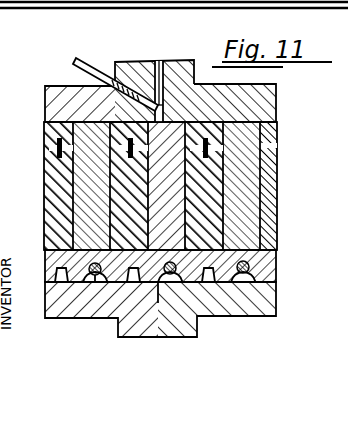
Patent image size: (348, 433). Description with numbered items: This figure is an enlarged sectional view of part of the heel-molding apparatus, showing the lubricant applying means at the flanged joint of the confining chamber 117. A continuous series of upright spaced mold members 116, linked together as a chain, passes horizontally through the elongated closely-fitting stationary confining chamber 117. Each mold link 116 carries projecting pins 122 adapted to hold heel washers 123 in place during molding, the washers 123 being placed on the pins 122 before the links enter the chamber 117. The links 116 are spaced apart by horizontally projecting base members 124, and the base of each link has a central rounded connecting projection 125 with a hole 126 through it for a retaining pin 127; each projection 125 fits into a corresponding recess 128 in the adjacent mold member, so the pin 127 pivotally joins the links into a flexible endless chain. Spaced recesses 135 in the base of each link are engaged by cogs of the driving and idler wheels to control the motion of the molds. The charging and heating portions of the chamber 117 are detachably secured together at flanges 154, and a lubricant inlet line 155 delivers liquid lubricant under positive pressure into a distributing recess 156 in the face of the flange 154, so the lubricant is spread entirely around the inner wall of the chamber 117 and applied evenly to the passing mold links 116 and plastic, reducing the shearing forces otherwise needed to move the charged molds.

The mold members 116 is at (176, 207).
The confining chamber 117 is at (283, 91).
The projecting pins 122 is at (52, 148).
The heel washers 123 is at (46, 124).
The base members 124 is at (160, 314).
The connecting projection 125 is at (46, 319).
The hole 126 is at (93, 276).
The retaining pin 127 is at (97, 276).
The recess 128 is at (62, 262).
The recesses 135 is at (55, 276).
The flange 154 is at (195, 62).
The lubricant inlet line 155 is at (97, 45).
The distributing recess 156 is at (172, 51).